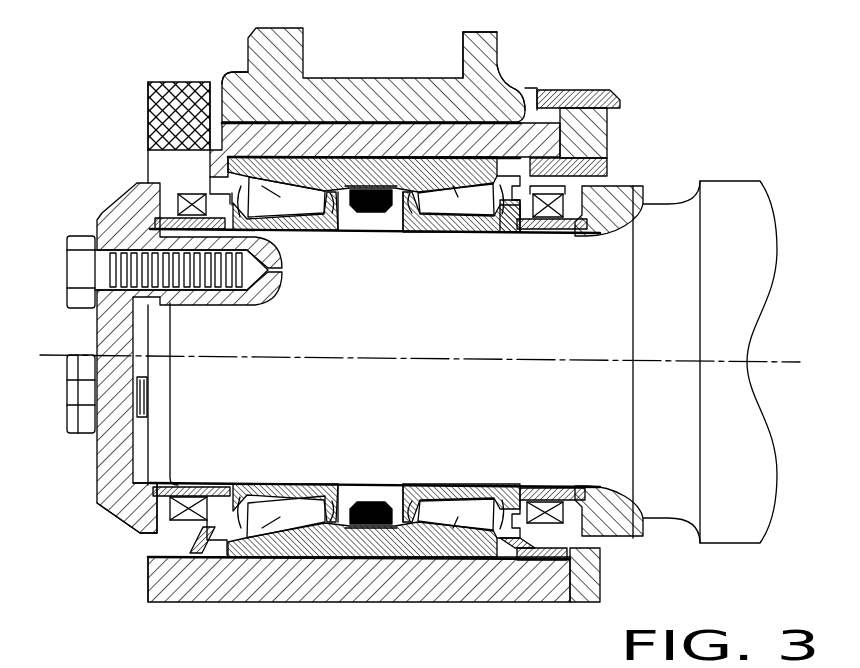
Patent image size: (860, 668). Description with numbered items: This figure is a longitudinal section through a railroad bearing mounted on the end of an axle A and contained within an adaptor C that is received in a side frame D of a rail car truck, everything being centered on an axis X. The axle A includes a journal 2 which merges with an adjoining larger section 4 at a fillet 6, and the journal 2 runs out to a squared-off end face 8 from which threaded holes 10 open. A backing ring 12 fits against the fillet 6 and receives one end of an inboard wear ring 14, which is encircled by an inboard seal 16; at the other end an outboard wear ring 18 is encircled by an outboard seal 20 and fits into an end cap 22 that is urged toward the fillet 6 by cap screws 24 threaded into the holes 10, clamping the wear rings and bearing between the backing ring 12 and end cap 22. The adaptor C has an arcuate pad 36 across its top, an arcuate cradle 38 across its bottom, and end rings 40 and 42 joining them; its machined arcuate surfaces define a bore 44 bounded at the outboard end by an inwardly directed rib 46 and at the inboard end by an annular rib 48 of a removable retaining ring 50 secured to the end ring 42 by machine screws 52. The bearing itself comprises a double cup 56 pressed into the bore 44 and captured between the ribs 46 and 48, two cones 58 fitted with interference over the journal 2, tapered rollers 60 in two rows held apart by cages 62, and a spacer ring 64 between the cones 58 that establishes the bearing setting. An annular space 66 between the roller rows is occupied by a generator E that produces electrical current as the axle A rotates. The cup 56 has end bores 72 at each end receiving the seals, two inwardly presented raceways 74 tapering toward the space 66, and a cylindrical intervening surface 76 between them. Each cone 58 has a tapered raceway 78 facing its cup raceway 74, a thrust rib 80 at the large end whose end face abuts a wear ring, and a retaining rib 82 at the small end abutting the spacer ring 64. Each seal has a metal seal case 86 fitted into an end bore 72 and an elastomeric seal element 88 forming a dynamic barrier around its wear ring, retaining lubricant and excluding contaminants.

The journal 2 is at (386, 341).
The larger section 4 is at (681, 326).
The fillet 6 is at (608, 542).
The end face 8 is at (112, 470).
The threaded holes 10 is at (210, 306).
The backing ring 12 is at (625, 187).
The inboard wear ring 14 is at (553, 236).
The inboard seal 16 is at (578, 600).
The outboard wear ring 18 is at (200, 150).
The outboard seal 20 is at (147, 579).
The end cap 22 is at (110, 508).
The cap screws 24 is at (73, 280).
The pad 36 is at (306, 77).
The cradle 38 is at (363, 587).
The end ring 40 is at (210, 97).
The inboard end ring 42 is at (563, 88).
The bore 44 is at (436, 555).
The rib 46 is at (212, 168).
The annular rib 48 is at (600, 160).
The retaining ring 50 is at (600, 125).
The machine screws 52 is at (617, 97).
The double cup 56 is at (338, 160).
The cones 58 is at (302, 232).
The tapered rollers 60 is at (244, 118).
The cages 62 is at (343, 486).
The spacer ring 64 is at (367, 232).
The annular space 66 is at (398, 186).
The end bores 72 is at (235, 545).
The cup raceways 74 is at (262, 525).
The intervening surface 76 is at (345, 232).
The tapered raceway 78 is at (307, 486).
The thrust rib 80 is at (152, 97).
The retaining rib 82 is at (325, 486).
The seal case 86 is at (203, 528).
The seal element 88 is at (192, 487).
The axle A is at (779, 262).
The adaptor C is at (493, 70).
The side frame D is at (485, 31).
The generator E is at (358, 190).
The axis X is at (430, 362).